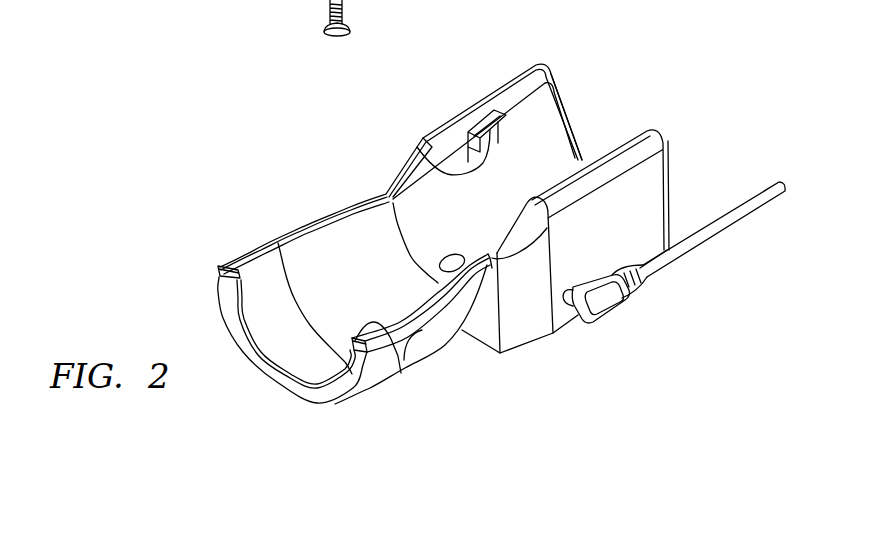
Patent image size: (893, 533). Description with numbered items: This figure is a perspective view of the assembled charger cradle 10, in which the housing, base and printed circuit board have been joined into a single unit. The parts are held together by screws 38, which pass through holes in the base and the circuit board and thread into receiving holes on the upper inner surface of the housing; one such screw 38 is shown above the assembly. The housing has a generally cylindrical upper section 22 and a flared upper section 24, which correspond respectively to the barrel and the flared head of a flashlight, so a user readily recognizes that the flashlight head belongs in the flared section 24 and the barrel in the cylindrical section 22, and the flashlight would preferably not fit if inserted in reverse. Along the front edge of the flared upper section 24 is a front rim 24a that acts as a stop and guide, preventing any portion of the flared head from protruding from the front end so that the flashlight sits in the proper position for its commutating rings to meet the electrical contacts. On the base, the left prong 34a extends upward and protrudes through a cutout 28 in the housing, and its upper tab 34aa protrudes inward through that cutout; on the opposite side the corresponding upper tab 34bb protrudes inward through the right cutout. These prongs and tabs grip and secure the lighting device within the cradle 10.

The charger cradle 10 is at (328, 166).
The cylindrical upper section 22 is at (531, 66).
The flared upper section 24 is at (278, 243).
The front rim 24a is at (401, 373).
The cutout 28 is at (468, 124).
The left prong 34a is at (417, 147).
The upper tab 34aa is at (513, 136).
The upper tab 34bb is at (581, 162).
The screw 38 is at (347, 33).